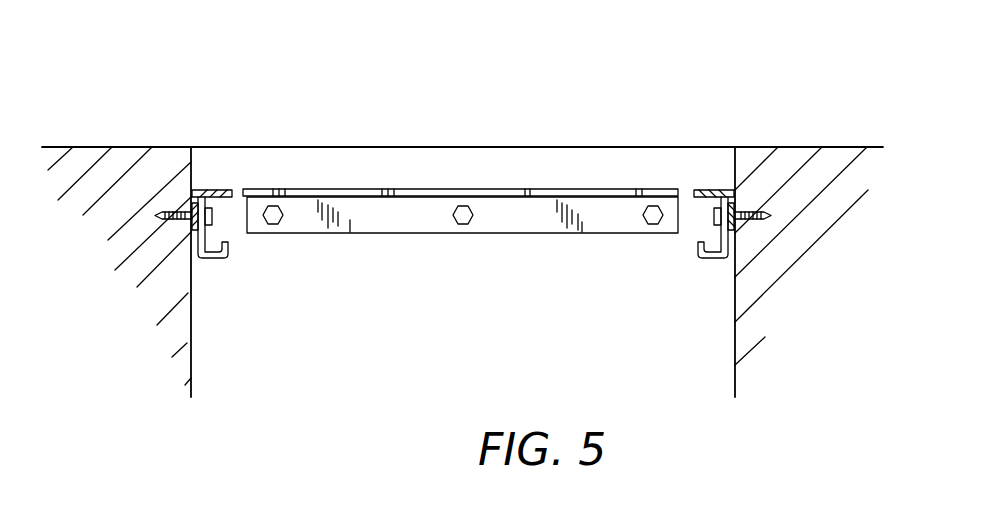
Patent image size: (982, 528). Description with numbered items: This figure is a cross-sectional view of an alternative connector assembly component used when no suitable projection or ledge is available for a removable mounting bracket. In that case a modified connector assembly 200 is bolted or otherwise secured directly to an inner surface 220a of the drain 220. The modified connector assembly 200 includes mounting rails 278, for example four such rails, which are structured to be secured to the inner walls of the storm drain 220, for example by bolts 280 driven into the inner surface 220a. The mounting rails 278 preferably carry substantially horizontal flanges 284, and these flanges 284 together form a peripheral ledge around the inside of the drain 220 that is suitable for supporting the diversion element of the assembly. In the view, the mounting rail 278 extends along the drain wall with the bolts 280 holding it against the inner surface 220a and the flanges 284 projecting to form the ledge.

The modified connector assembly 200 is at (507, 213).
The drain 220 is at (357, 153).
The inner surface 220a is at (194, 296).
The mounting rail 278 is at (737, 202).
The bolt 280 is at (245, 197).
The substantially horizontal flange 284 is at (215, 187).